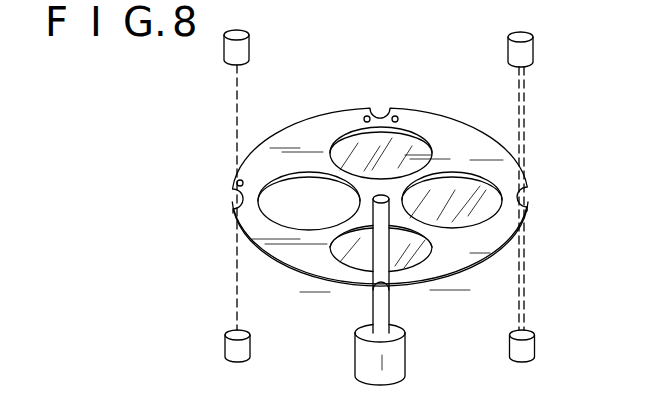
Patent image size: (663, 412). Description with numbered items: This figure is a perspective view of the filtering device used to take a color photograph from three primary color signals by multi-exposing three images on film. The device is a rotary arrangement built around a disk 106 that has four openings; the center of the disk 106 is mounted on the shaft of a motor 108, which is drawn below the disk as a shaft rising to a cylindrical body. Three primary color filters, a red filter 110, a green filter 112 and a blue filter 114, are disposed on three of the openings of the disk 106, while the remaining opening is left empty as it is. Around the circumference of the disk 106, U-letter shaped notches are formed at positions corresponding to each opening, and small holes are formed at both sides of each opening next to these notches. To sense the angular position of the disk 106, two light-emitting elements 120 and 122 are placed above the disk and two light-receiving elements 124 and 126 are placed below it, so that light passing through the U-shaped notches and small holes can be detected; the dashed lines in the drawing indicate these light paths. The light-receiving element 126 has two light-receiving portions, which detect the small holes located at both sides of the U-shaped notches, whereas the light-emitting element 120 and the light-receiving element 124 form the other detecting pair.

The disk 106 is at (442, 124).
The motor 108 is at (405, 352).
The red filter 110 is at (364, 131).
The green filter 112 is at (467, 183).
The blue filter 114 is at (423, 251).
The light-emitting element 120 is at (249, 45).
The light-emitting element 122 is at (533, 47).
The light-receiving element 124 is at (250, 346).
The light-receiving element 126 is at (535, 342).